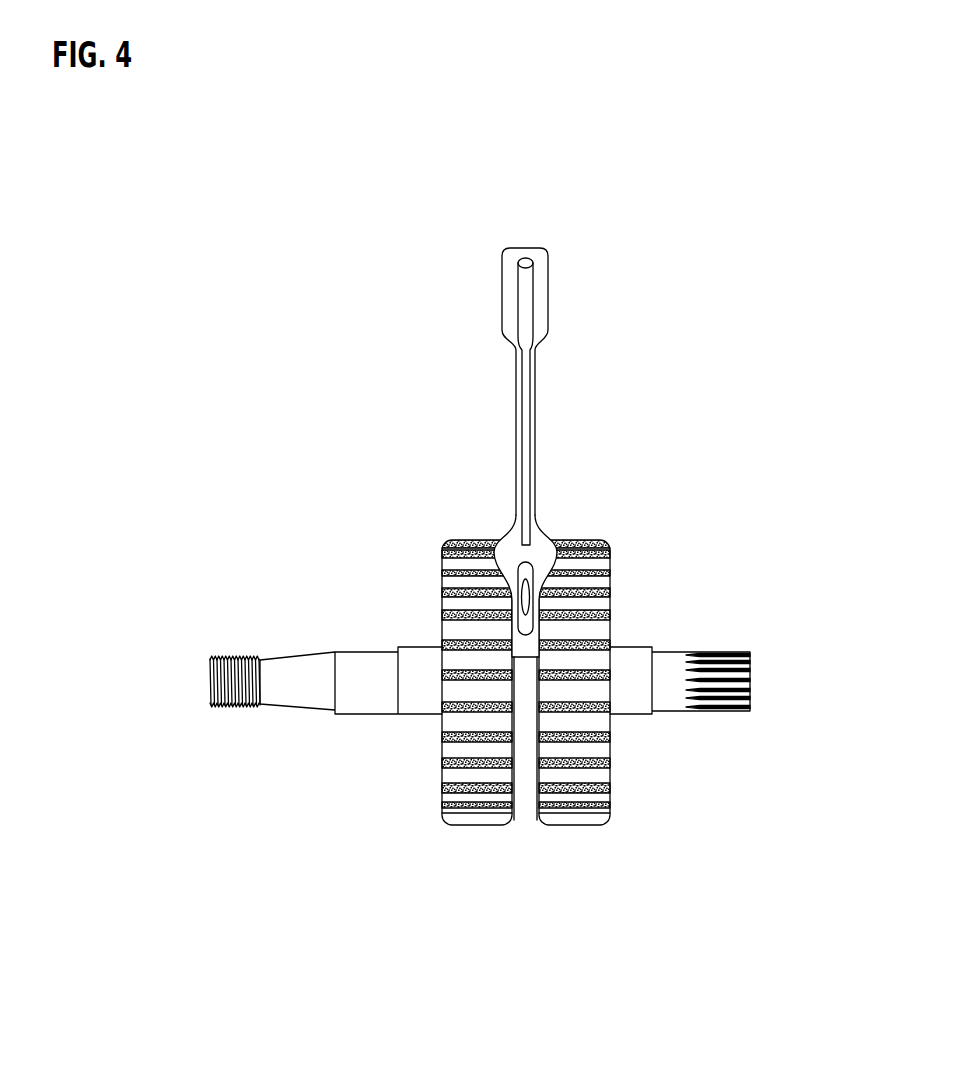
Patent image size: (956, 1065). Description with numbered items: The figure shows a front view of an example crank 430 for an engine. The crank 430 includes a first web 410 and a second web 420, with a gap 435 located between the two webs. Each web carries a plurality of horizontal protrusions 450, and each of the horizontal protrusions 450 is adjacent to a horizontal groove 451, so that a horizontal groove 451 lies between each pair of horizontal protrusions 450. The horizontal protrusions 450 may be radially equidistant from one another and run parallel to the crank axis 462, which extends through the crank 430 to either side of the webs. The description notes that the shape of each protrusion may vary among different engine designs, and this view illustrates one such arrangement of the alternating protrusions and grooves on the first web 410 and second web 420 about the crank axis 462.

The first web 410 is at (464, 529).
The second web 420 is at (586, 529).
The crank 430 is at (727, 487).
The gap 435 is at (525, 828).
The horizontal protrusions 450 is at (466, 617).
The horizontal groove 451 is at (463, 778).
The crank axis 462 is at (311, 735).